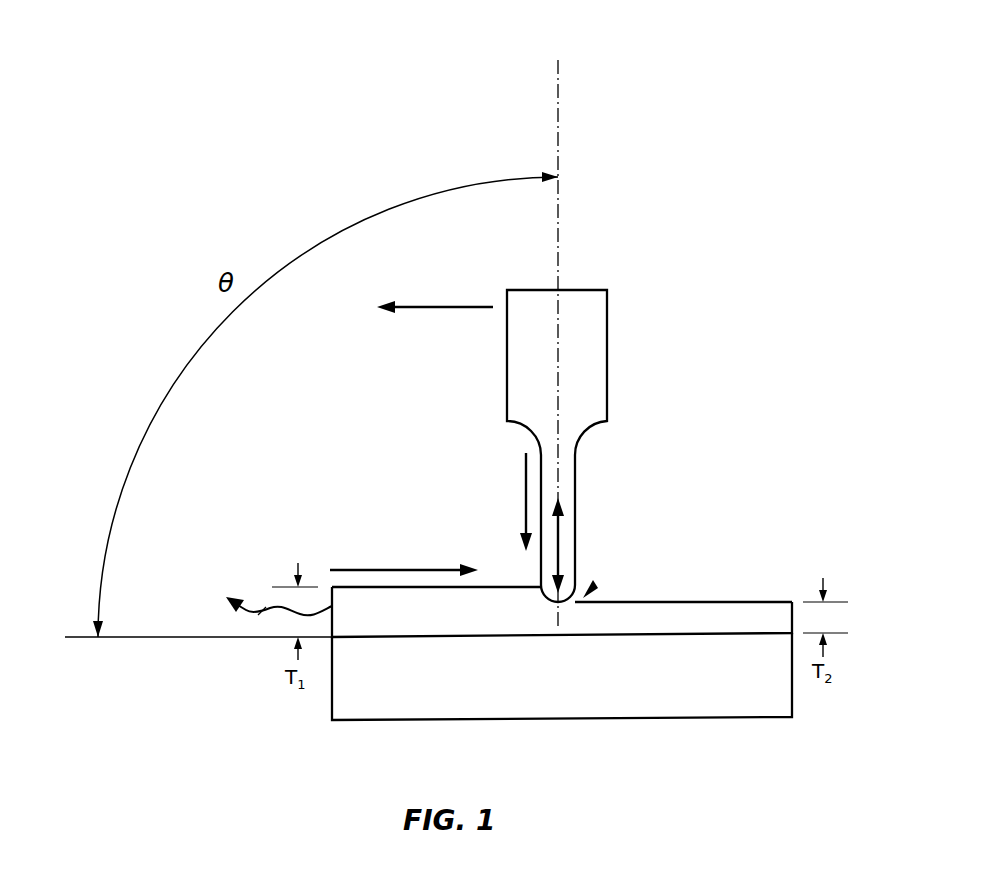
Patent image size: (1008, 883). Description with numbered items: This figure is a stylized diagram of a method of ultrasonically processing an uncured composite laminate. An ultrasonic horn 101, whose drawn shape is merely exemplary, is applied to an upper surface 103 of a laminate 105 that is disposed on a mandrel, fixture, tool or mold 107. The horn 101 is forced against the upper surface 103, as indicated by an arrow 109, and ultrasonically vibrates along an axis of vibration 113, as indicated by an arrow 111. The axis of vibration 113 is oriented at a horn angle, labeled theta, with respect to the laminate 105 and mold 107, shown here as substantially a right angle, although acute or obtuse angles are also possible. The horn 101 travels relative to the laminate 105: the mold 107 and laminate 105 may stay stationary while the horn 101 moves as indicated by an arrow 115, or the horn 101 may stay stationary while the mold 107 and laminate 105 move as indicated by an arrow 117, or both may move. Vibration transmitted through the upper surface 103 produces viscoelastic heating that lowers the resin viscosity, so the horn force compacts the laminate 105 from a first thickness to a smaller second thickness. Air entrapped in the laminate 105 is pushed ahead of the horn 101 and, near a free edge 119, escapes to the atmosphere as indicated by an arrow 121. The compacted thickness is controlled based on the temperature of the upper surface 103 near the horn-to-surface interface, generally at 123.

The ultrasonic horn 101 is at (602, 320).
The upper surface 103 is at (660, 600).
The laminate 105 is at (757, 618).
The mold 107 is at (660, 700).
The arrow 109 is at (526, 491).
The arrow 111 is at (562, 541).
The axis of vibration 113 is at (558, 141).
The arrow 115 is at (457, 307).
The arrow 117 is at (378, 570).
The edge 119 is at (332, 598).
The arrow 121 is at (258, 615).
The interface 123 is at (590, 584).